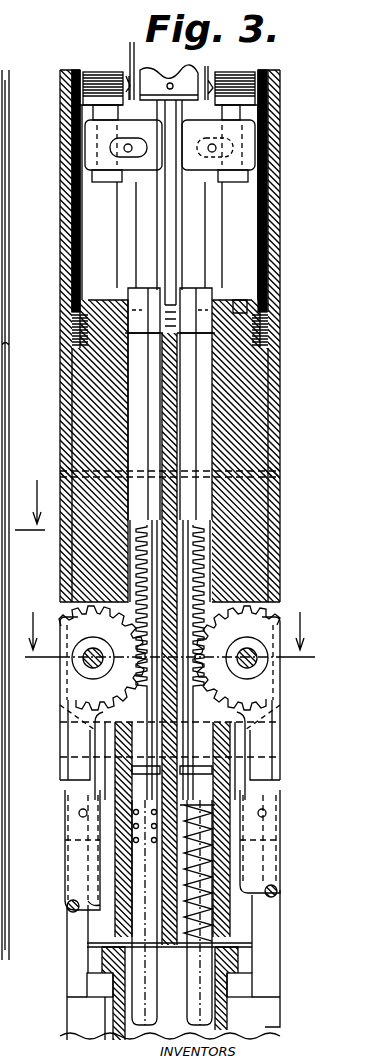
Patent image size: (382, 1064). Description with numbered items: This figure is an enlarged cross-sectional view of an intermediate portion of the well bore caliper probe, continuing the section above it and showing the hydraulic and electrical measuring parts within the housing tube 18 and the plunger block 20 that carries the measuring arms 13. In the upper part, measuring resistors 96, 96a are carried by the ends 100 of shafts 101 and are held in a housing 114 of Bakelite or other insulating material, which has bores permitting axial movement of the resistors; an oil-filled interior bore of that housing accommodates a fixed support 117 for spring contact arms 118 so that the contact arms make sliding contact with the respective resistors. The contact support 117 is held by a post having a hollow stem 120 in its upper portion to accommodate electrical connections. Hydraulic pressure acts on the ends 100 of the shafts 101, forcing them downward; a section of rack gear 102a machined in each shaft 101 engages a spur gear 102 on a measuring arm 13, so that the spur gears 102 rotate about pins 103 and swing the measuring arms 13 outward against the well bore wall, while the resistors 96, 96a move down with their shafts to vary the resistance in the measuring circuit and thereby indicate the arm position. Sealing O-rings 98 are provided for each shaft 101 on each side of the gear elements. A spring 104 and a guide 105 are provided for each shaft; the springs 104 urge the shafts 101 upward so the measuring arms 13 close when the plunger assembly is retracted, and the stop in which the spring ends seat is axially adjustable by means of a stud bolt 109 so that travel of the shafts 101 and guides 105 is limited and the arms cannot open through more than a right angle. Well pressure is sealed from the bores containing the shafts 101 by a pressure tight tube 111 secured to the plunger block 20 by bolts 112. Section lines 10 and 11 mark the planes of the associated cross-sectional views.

The measuring resistor 96 is at (103, 72).
The measuring resistor 96a is at (226, 72).
The fixed support 117 is at (153, 78).
The housing 114 is at (72, 128).
The housing tube 18 is at (278, 226).
The shaft end 100 is at (140, 164).
The spring contact arm 118 is at (170, 212).
The shaft 101 is at (138, 262).
The O-ring 98 is at (128, 330).
The hollow stem 120 is at (191, 532).
The measuring arm 13 is at (2, 357).
The plunger block 20 is at (95, 432).
The section line 10 is at (30, 493).
The stud bolt 109 is at (0, 555).
The section line 11 is at (167, 623).
The pin 103 is at (105, 636).
The spur gear 102 is at (90, 687).
The rack gear 102a is at (140, 698).
The spring 104 is at (207, 900).
The bolt 112 is at (102, 984).
The guide 105 is at (147, 1013).
The pressure tight tube 111 is at (105, 1032).